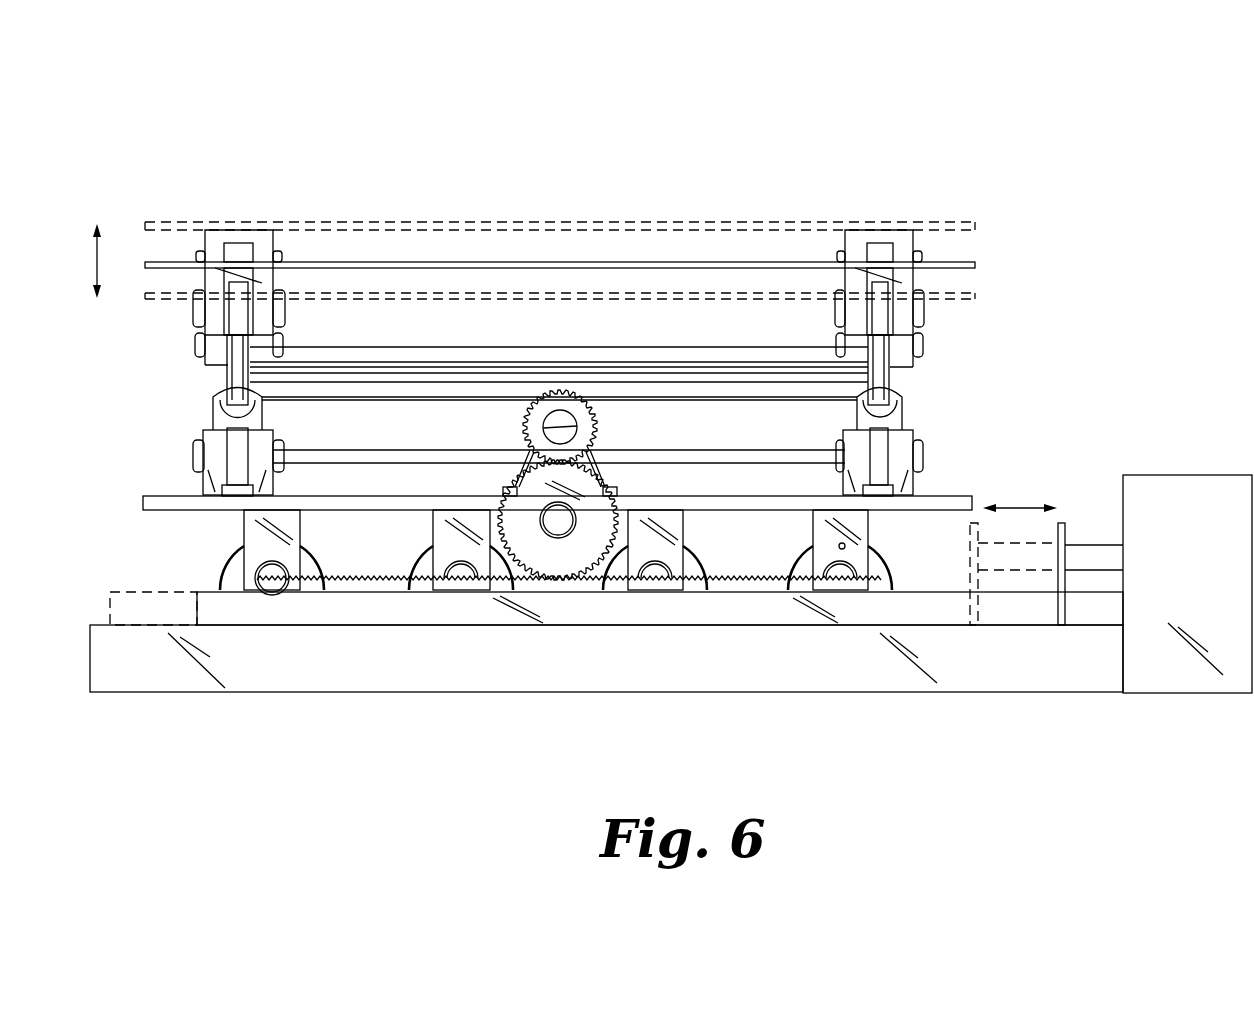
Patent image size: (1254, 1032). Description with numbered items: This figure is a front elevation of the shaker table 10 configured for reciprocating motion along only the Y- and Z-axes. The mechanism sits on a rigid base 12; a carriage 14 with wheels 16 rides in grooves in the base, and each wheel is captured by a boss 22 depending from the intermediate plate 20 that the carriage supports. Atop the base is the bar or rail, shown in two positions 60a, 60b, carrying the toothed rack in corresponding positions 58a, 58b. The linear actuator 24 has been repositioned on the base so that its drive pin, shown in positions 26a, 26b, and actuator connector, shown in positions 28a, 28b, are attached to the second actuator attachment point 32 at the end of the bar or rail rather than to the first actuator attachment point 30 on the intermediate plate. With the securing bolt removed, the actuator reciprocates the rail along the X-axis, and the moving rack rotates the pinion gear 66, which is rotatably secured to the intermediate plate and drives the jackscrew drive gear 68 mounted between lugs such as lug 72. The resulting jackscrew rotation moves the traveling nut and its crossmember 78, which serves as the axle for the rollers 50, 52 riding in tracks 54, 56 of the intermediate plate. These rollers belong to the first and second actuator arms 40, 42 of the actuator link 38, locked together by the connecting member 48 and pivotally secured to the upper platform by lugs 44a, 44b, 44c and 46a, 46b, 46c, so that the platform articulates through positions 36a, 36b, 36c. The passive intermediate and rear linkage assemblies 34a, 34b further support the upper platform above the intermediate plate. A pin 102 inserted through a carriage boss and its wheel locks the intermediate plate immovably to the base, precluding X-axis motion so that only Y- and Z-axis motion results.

The shaker table 10 is at (318, 130).
The base 12 is at (972, 692).
The carriage 14 is at (155, 541).
The wheels 16 is at (313, 571).
The intermediate plate 20 is at (790, 496).
The bosses 22 is at (303, 524).
The linear actuator 24 is at (1198, 552).
The drive pin position 26a is at (1095, 545).
The drive pin position 26b is at (1000, 572).
The actuator connector position 28a is at (1068, 594).
The actuator connector position 28b is at (970, 580).
The first actuator attachment point 30 is at (972, 500).
The second actuator attachment point 32 is at (1065, 610).
The intermediate linkage assembly 34a is at (962, 333).
The rear linkage assembly 34b is at (1033, 330).
The upper platform position 36a is at (547, 222).
The upper platform position 36b is at (660, 262).
The upper platform position 36c is at (742, 300).
The actuator link 38 is at (170, 400).
The first actuator arm 40 is at (225, 373).
The second actuator arm 42 is at (905, 378).
The boss or lug 44a is at (200, 233).
The boss or lug 44b is at (205, 267).
The boss or lug 44c is at (205, 362).
The boss or lug 46a is at (917, 240).
The boss or lug 46b is at (917, 270).
The boss or lug 46c is at (920, 350).
The connecting member 48 is at (690, 347).
The roller 50 is at (237, 440).
The roller 52 is at (857, 432).
The track or slot 54 is at (212, 470).
The track or slot 56 is at (880, 462).
The toothed rack position 58a is at (410, 596).
The toothed rack position 58b is at (320, 593).
The bar or rail position 60a is at (748, 612).
The bar or rail position 60b is at (178, 620).
The pinion gear 66 is at (572, 565).
The jackscrew drive gear 68 is at (523, 427).
The boss or lug 72 is at (515, 474).
The crossmember 78 is at (725, 450).
The pin 102 is at (846, 543).